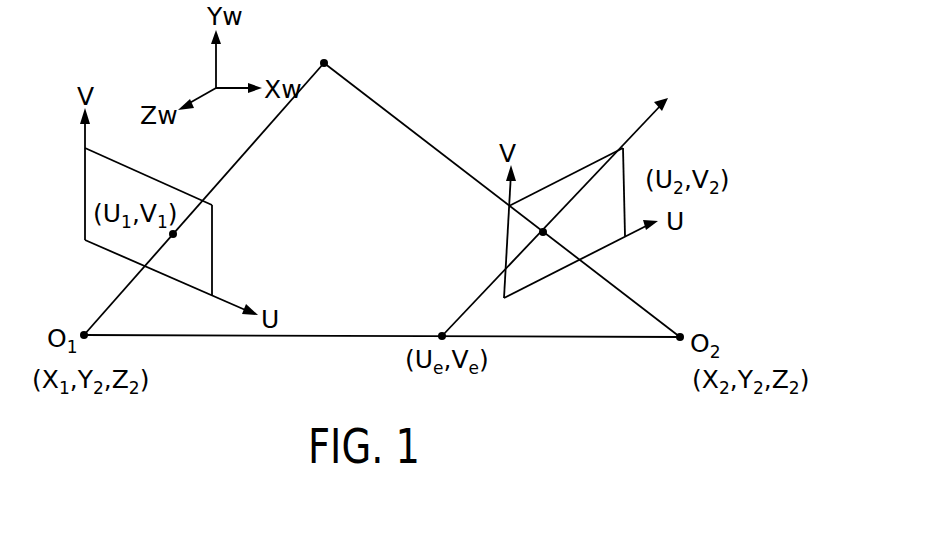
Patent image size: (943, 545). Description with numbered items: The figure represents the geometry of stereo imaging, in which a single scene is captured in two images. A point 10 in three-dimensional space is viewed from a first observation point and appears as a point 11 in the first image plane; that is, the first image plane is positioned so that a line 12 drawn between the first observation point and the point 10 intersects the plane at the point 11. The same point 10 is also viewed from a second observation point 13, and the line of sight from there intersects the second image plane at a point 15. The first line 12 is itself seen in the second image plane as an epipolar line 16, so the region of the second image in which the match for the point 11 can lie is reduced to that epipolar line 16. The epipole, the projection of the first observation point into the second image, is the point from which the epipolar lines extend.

The point in 3D space 10 is at (324, 63).
The point in first image plane 11 is at (177, 234).
The line between first observation point and point 12 is at (125, 293).
The second observation point 13 is at (677, 341).
The point in second image plane 15 is at (540, 232).
The epipolar line 16 is at (588, 183).